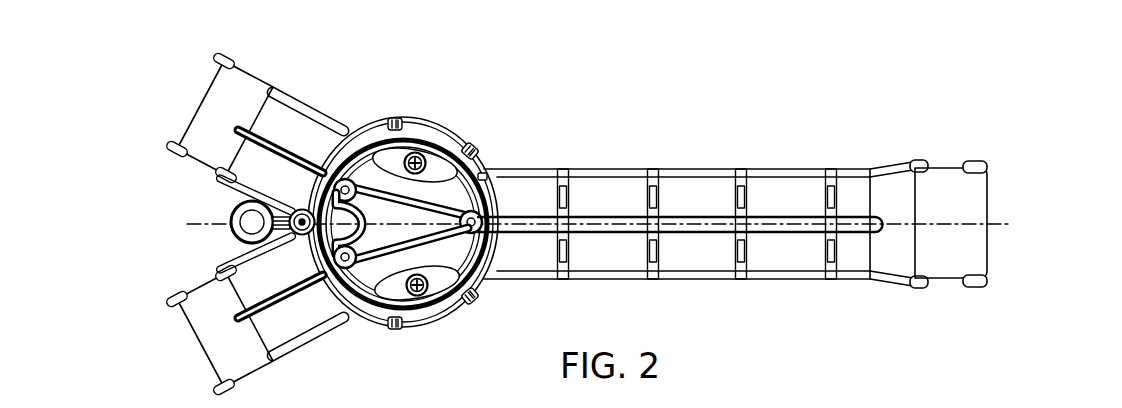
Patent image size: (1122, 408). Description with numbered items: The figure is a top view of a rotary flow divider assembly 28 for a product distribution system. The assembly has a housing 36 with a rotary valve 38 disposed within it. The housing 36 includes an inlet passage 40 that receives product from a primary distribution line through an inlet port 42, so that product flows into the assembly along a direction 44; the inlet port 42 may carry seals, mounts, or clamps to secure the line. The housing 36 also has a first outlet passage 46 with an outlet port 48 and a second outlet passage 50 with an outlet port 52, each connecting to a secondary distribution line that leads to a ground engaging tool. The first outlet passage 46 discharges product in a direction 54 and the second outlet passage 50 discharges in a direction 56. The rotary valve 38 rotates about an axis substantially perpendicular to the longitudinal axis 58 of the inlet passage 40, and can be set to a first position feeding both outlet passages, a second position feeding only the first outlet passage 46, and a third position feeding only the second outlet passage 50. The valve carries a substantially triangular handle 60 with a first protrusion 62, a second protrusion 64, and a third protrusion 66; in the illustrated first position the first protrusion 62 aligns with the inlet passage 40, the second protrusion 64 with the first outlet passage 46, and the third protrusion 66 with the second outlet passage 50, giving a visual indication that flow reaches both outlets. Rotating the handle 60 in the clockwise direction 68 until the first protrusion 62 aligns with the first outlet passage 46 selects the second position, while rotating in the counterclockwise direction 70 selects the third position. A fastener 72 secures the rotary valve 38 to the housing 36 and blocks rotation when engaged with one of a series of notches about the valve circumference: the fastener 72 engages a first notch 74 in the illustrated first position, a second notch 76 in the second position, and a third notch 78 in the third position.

The rotary flow divider assembly 28 is at (632, 107).
The housing 36 is at (457, 315).
The rotary valve 38 is at (380, 115).
The inlet passage 40 is at (680, 168).
The inlet port 42 is at (942, 165).
The direction 44 is at (1020, 225).
The first outlet passage 46 is at (295, 343).
The outlet port 48 is at (238, 372).
The second outlet passage 50 is at (298, 107).
The outlet port 52 is at (245, 88).
The direction 54 is at (178, 352).
The direction 56 is at (168, 90).
The longitudinal axis 58 is at (200, 222).
The handle 60 is at (417, 197).
The first protrusion 62 is at (492, 248).
The second protrusion 64 is at (349, 290).
The third protrusion 66 is at (332, 172).
The clockwise direction 68 is at (452, 102).
The counterclockwise direction 70 is at (375, 347).
The fastener 72 is at (289, 207).
The first notch 74 is at (320, 320).
The second notch 76 is at (483, 300).
The third notch 78 is at (493, 168).